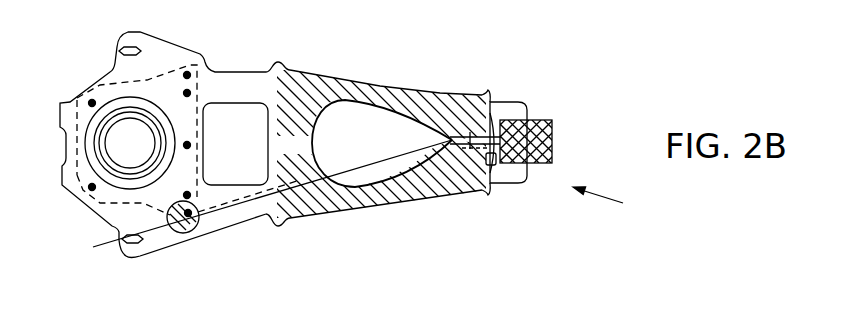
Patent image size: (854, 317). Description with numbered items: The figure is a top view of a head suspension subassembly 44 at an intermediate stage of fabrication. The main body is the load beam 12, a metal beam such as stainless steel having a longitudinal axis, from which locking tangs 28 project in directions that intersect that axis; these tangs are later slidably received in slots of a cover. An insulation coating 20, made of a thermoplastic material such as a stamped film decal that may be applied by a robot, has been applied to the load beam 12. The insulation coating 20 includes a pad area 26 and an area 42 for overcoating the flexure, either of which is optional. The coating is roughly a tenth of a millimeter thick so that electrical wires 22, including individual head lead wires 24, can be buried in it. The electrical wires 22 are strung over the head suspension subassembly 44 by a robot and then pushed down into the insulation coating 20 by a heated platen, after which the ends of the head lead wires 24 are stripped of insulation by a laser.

The load beam 12 is at (222, 80).
The insulation coating 20 is at (403, 197).
The electrical wires 22 is at (355, 188).
The head lead wires 24 is at (494, 94).
The pad area 26 is at (186, 234).
The locking tangs 28 is at (283, 62).
The flexure overcoating area 42 is at (553, 130).
The head suspension subassembly 44 is at (652, 228).